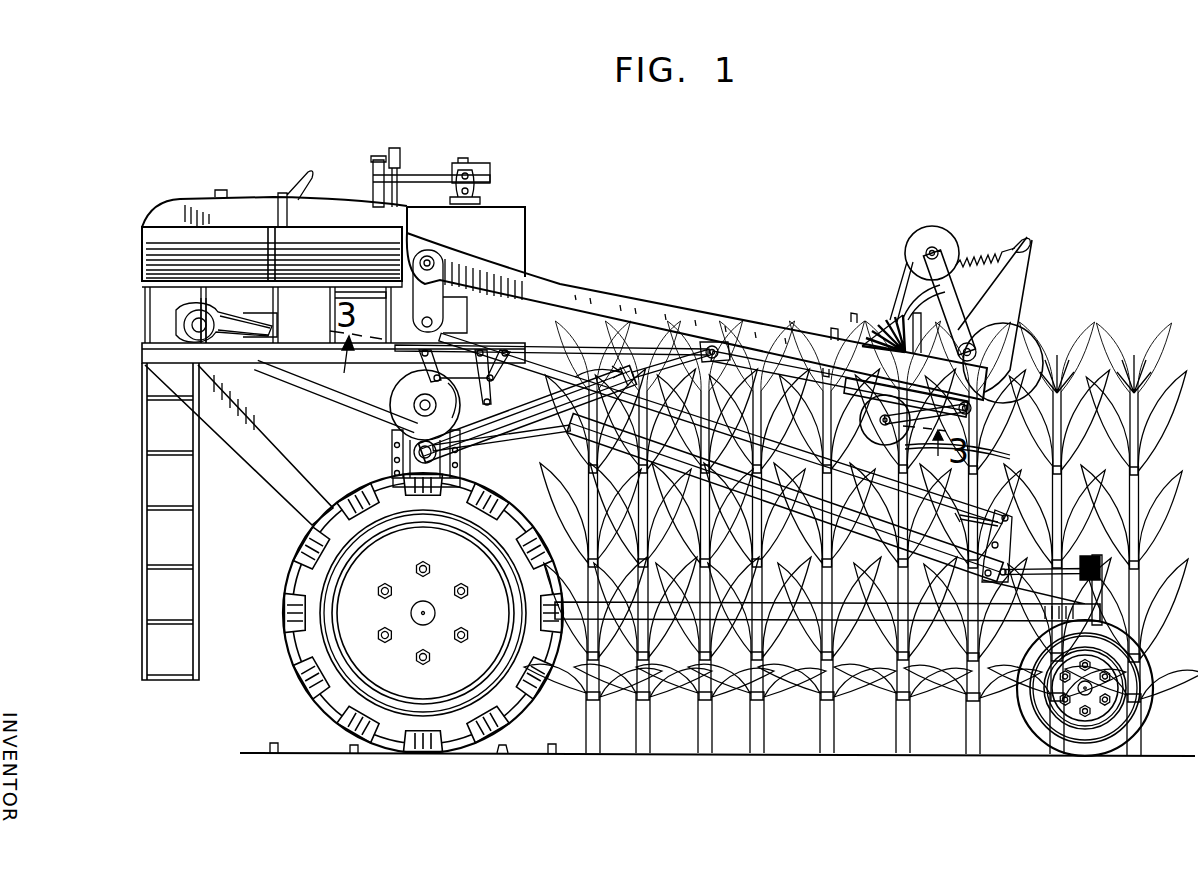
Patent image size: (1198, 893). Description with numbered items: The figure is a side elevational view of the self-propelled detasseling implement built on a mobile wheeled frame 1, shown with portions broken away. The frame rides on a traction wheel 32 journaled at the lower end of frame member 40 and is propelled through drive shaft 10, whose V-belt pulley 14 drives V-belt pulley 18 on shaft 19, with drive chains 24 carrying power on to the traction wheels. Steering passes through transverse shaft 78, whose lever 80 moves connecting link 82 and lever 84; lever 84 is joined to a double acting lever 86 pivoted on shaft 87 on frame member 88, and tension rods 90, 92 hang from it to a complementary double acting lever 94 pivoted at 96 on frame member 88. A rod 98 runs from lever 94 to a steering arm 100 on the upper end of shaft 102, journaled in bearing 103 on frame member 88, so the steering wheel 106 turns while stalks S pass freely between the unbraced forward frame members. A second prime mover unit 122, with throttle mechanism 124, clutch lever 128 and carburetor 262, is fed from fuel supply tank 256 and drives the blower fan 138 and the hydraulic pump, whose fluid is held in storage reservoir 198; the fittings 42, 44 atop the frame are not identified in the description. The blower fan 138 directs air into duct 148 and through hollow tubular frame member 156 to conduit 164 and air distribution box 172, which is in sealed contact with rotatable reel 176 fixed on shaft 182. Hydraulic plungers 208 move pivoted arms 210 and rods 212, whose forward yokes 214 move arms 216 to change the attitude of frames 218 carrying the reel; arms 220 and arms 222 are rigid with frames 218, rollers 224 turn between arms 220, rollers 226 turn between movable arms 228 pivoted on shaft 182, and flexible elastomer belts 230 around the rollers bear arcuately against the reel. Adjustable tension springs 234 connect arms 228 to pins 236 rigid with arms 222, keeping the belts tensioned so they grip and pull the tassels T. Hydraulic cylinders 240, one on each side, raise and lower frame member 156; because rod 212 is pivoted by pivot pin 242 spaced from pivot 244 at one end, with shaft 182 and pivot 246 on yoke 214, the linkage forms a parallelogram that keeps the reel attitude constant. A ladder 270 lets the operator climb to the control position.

The mobile wheeled frame 1 is at (257, 490).
The drive shaft 10 is at (188, 323).
The V-belt pulley 14 is at (222, 352).
The V-belt pulley 18 is at (393, 400).
The shaft 19 is at (392, 447).
The drive chains 24 is at (392, 462).
The traction wheel 32 is at (466, 716).
The frame member 40 is at (440, 468).
The filler cap 42 is at (222, 190).
The handle 44 is at (305, 172).
The shaft 78 is at (425, 355).
The lever 80 is at (404, 374).
The connecting link 82 is at (440, 450).
The lever 84 is at (486, 349).
The double acting lever 86 is at (607, 330).
The shaft 87 is at (503, 414).
The frame member 88 is at (882, 540).
The tension rod 90 is at (670, 410).
The tension rod 92 is at (603, 450).
The complementary double acting lever 94 is at (997, 532).
The pivot 96 is at (1003, 548).
The rod 98 is at (1074, 567).
The steering arm 100 is at (1098, 561).
The shaft 102 is at (1100, 572).
The bearing 103 is at (1102, 623).
The wheel 106 is at (1093, 745).
The second prime mover unit 122 is at (518, 230).
The throttle mechanism 124 is at (434, 176).
The lever 128 is at (395, 148).
The blower fan 138 is at (175, 210).
The duct 148 is at (525, 273).
The hollow tubular frame member 156 is at (752, 327).
The conduit 164 is at (870, 337).
The air distribution box 172 is at (1000, 410).
The rotatable reel 176 is at (1041, 312).
The shaft 182 is at (975, 346).
The storage reservoir 198 is at (162, 248).
The plungers 208 is at (396, 305).
The pivoted arms 210 is at (430, 308).
The rods 212 is at (630, 346).
The yokes 214 is at (910, 392).
The arms 216 is at (988, 412).
The frames 218 is at (1031, 344).
The arms 220 is at (912, 452).
The arms 222 is at (1002, 283).
The rollers 224 is at (861, 418).
The rollers 226 is at (929, 235).
The movable arms 228 is at (925, 256).
The flexible elastomer belts 230 is at (907, 292).
The adjustable tension springs 234 is at (990, 243).
The pins 236 is at (1024, 240).
The hydraulic cylinders 240 is at (507, 432).
The pivot pin 242 is at (398, 278).
The pivot 244 is at (432, 258).
The pivot 246 is at (965, 402).
The fuel supply tank 256 is at (312, 238).
The carburetor 262 is at (476, 168).
The ladder 270 is at (140, 465).
The stalks S is at (861, 538).
The tassels T is at (1140, 383).